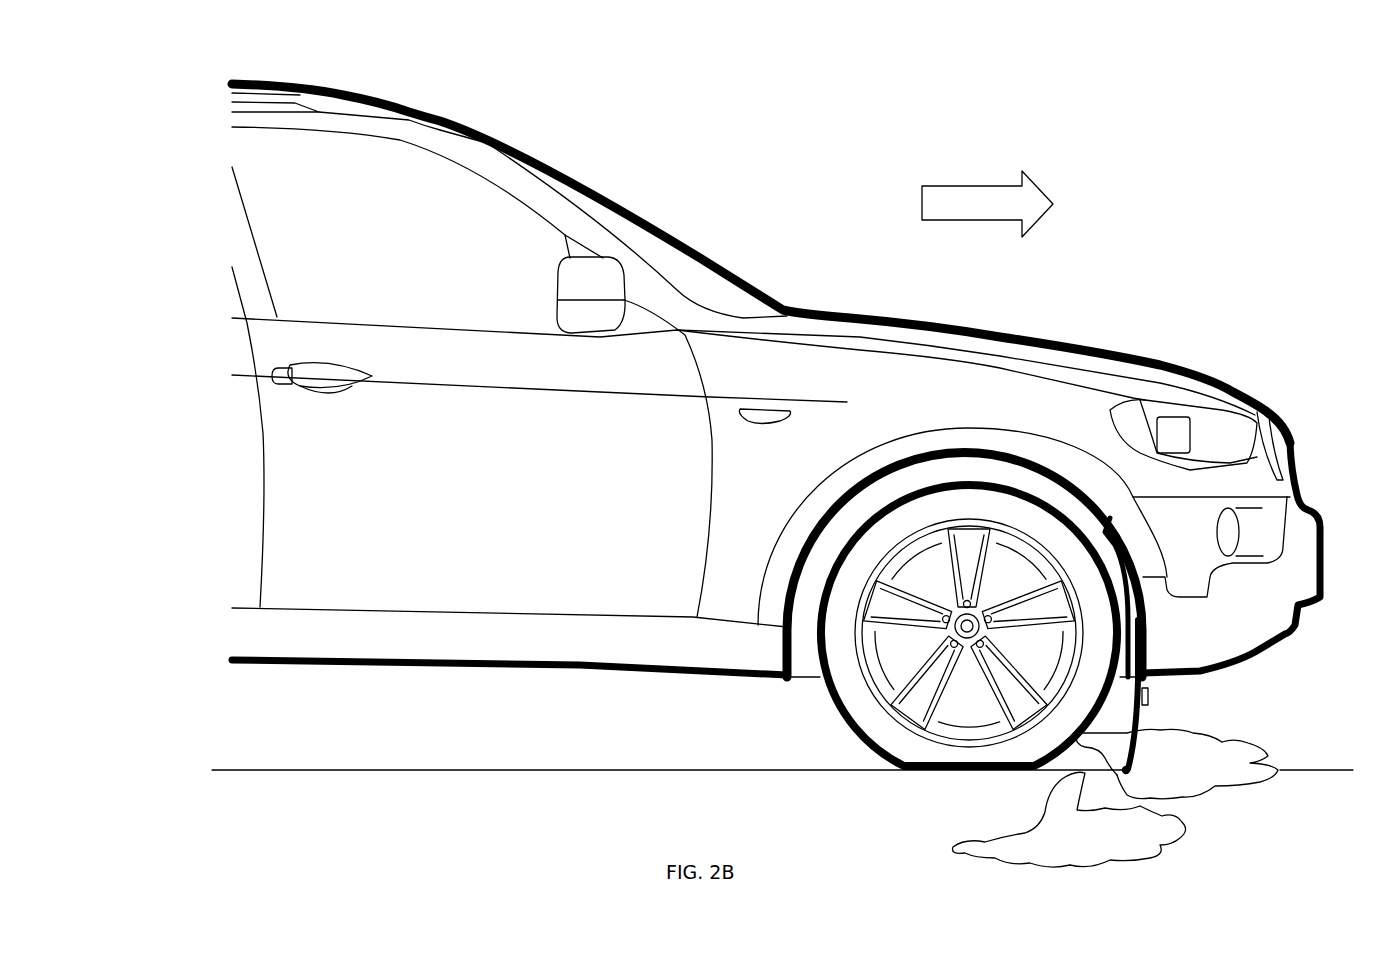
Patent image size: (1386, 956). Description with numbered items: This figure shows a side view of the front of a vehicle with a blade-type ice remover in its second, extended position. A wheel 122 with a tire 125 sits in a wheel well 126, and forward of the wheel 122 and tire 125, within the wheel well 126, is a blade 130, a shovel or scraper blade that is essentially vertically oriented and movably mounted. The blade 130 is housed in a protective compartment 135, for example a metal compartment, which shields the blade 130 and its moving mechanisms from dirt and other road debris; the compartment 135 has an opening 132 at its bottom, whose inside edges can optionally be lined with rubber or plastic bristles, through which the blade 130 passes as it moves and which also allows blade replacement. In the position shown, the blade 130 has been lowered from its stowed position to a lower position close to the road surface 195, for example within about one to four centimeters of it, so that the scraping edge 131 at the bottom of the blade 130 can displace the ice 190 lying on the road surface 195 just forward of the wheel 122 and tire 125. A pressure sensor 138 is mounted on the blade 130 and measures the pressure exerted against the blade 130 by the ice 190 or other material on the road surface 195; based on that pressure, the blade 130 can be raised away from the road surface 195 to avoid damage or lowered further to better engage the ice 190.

The wheel 122 is at (938, 732).
The tire 125 is at (860, 735).
The wheel well 126 is at (976, 472).
The blade 130 is at (1124, 772).
The scraping edge 131 is at (1137, 766).
The opening 132 is at (1127, 688).
The protective compartment 135 is at (1108, 518).
The pressure sensor 138 is at (1149, 697).
The ice 190 is at (1272, 754).
The road surface 195 is at (773, 770).